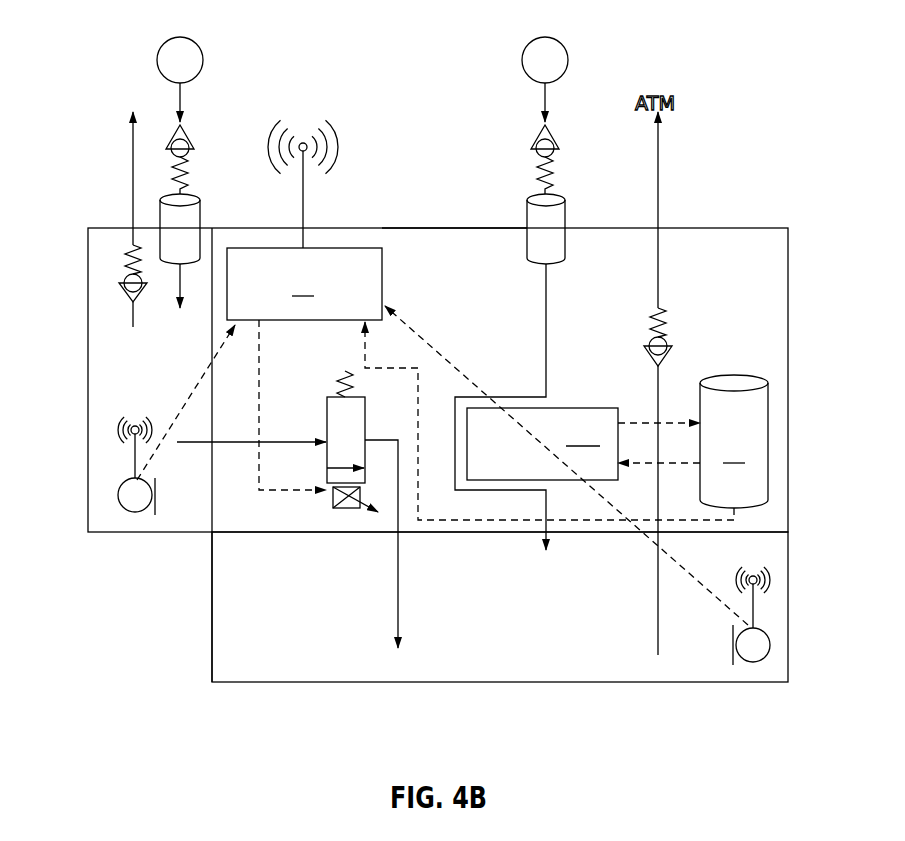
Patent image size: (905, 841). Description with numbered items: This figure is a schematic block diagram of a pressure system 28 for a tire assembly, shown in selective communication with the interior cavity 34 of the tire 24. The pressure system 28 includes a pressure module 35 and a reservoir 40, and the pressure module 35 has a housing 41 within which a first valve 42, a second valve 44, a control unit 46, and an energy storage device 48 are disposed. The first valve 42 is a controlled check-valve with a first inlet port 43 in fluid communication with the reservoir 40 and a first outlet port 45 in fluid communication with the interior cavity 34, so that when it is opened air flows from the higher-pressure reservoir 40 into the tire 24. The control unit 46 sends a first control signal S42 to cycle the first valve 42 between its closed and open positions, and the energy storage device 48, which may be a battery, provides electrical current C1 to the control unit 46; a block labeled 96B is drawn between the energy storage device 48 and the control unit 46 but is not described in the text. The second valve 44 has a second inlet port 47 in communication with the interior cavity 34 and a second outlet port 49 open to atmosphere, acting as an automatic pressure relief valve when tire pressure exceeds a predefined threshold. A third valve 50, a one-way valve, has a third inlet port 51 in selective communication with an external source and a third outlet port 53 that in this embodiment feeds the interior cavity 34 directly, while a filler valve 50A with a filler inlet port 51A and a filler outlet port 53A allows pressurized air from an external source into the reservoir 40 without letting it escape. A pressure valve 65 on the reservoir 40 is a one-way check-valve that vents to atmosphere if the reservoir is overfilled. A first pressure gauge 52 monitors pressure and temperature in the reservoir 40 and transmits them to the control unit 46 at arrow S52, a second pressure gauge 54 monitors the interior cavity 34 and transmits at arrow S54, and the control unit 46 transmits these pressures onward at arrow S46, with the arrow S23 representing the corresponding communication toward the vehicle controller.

The tire 24 is at (667, 682).
The pressure system 28 is at (100, 167).
The interior cavity 34 is at (558, 635).
The pressure module 35 is at (430, 228).
The reservoir 40 is at (112, 298).
The housing 41 is at (747, 228).
The first valve 42 is at (345, 428).
The first inlet port 43 is at (283, 442).
The second valve 44 is at (668, 355).
The first outlet port 45 is at (398, 585).
The control unit 46 is at (304, 220).
The second inlet port 47 is at (658, 388).
The energy storage device 48 is at (734, 441).
The second outlet port 49 is at (658, 285).
The third valve 50 is at (535, 145).
The filler valve 50A is at (188, 150).
The third inlet port 51 is at (550, 100).
The filler inlet port 51A is at (178, 92).
The first pressure gauge 52 is at (137, 505).
The third outlet port 53 is at (545, 305).
The filler outlet port 53A is at (182, 278).
The second pressure gauge 54 is at (758, 645).
The pressure valve 65 is at (130, 278).
The control module 96B is at (583, 444).
The electrical current C1 is at (420, 488).
The wireless signal S23 is at (352, 148).
The first control signal S42 is at (262, 385).
The pressure transmission signal S46 is at (262, 148).
The first pressure signal S52 is at (185, 398).
The second pressure signal S54 is at (712, 595).